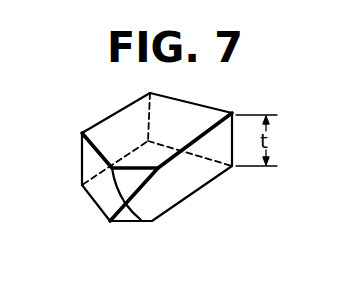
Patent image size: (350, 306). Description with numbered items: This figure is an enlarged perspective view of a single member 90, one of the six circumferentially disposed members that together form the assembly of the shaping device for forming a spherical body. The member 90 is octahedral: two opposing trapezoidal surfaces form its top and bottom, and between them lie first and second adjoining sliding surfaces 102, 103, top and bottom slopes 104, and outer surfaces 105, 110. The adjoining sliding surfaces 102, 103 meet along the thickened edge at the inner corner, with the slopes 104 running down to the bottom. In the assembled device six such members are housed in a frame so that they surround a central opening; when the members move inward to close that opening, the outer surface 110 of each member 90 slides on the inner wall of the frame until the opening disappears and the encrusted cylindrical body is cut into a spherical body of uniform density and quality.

The member 90 is at (222, 104).
The first sliding surface 102 is at (104, 200).
The second sliding surface 103 is at (192, 178).
The top and bottom slopes 104 is at (132, 212).
The outer surface 105 is at (112, 130).
The outer surface 110 is at (180, 121).